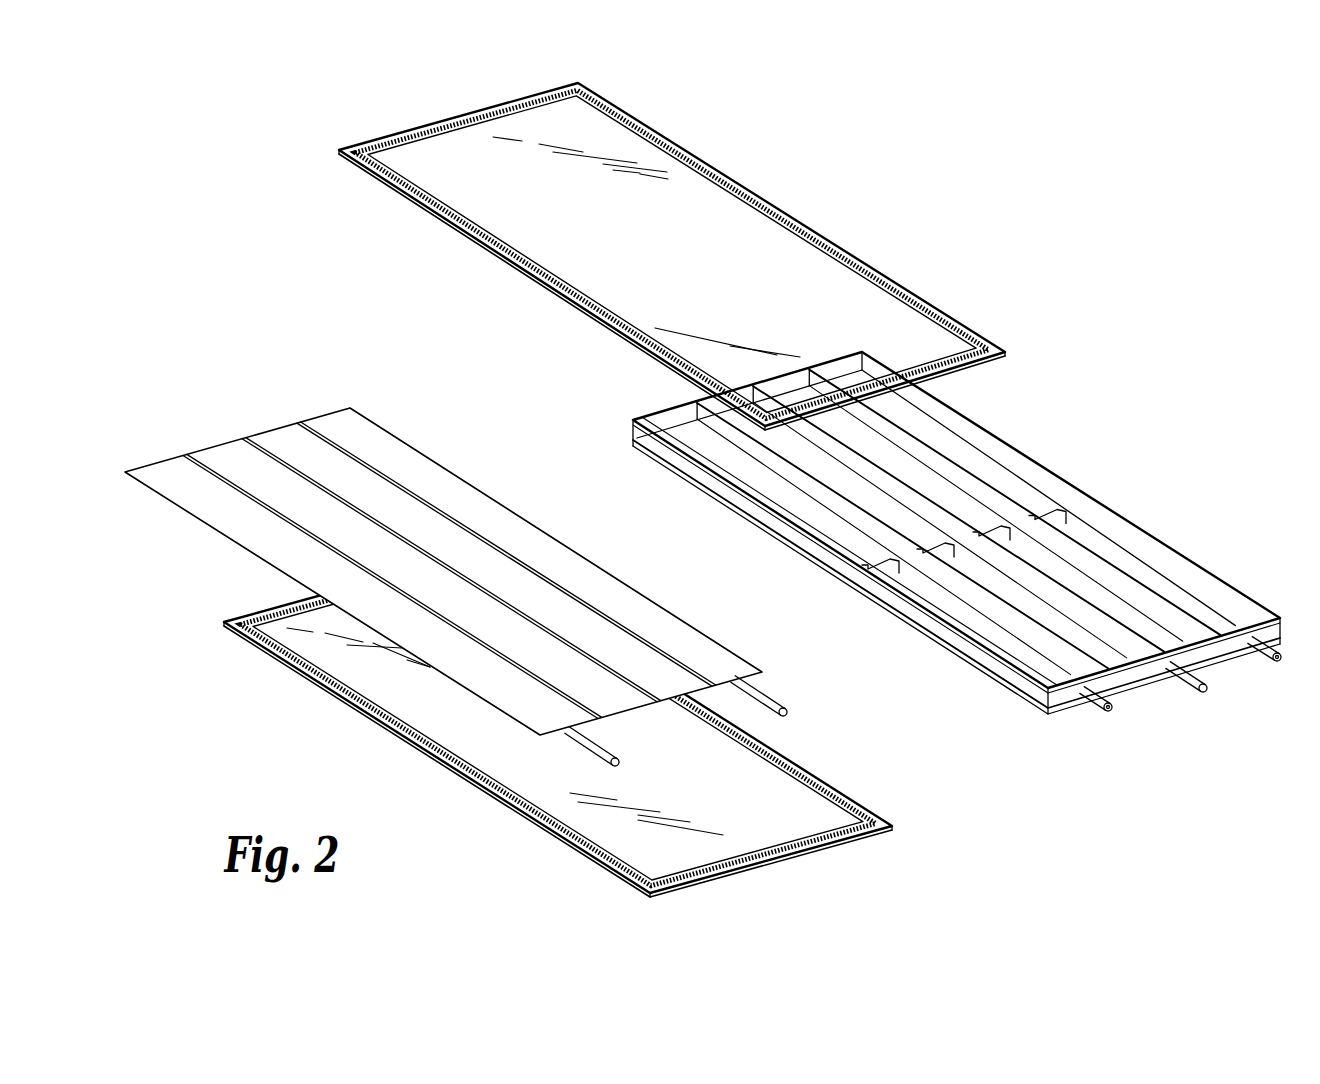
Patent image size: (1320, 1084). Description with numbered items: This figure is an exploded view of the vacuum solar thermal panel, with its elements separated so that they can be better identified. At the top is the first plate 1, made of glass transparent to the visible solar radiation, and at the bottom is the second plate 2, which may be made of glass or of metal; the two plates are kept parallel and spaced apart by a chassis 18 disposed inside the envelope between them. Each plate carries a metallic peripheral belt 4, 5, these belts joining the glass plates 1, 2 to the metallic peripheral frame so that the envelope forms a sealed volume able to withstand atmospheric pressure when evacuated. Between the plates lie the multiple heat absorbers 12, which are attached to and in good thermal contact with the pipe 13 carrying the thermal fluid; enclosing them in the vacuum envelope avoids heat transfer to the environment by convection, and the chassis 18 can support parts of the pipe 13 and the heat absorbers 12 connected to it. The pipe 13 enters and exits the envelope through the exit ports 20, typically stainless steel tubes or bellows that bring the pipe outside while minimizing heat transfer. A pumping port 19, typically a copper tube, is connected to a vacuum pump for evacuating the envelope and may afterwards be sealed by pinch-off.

The first plate 1 is at (834, 282).
The second plate 2 is at (632, 836).
The metallic peripheral belt 4 is at (987, 365).
The metallic peripheral belt 5 is at (853, 838).
The heat absorbers 12 is at (335, 427).
The pipe 13 is at (773, 707).
The chassis 18 is at (1172, 543).
The pumping port 19 is at (1193, 690).
The exit port 20 is at (1096, 703).